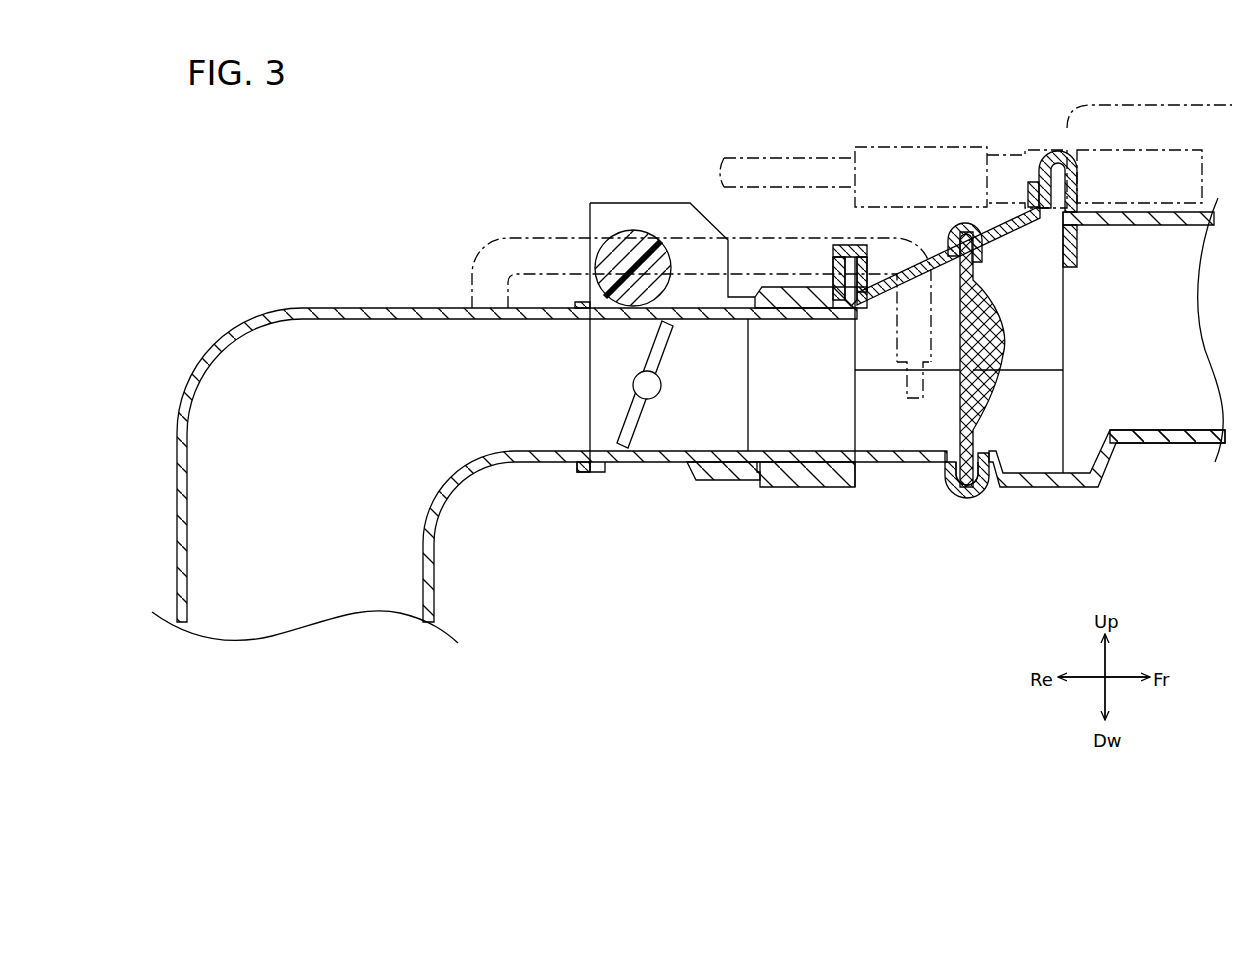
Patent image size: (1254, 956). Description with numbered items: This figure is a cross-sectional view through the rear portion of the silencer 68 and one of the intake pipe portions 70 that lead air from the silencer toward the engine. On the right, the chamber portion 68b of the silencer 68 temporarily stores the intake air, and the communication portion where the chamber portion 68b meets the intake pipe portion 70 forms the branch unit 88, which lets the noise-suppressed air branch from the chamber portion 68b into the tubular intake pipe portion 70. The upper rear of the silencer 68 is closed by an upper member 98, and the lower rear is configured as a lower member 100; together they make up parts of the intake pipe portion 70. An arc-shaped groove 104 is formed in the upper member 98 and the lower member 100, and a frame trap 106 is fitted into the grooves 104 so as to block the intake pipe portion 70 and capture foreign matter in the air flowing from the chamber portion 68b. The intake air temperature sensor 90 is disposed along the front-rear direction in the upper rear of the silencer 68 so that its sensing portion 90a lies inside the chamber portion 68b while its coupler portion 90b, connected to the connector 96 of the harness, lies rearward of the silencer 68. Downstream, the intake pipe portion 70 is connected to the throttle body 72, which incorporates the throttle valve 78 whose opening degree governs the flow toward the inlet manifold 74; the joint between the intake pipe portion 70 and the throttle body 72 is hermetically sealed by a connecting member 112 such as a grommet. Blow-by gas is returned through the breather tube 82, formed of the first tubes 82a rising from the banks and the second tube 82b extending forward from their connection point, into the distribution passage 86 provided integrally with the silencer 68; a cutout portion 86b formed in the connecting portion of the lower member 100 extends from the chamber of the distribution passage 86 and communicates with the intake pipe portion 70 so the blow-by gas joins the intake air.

The silencer 68 is at (1160, 100).
The chamber portion 68b is at (1168, 408).
The intake pipe portion 70 is at (1008, 238).
The throttle body 72 is at (646, 203).
The inlet manifold 74 is at (177, 492).
The throttle valve 78 is at (645, 417).
The breather tube 82 is at (633, 282).
The first tube 82a is at (470, 285).
The second tube 82b is at (752, 272).
The distribution passage 86 is at (832, 467).
The cutout portion 86b is at (905, 400).
The branch unit 88 is at (1027, 492).
The intake air temperature sensor 90 is at (1105, 177).
The sensing portion 90a is at (1128, 150).
The coupler portion 90b is at (1052, 146).
The connector 96 is at (868, 147).
The upper member 98 is at (960, 226).
The lower member 100 is at (937, 465).
The arc-shaped groove 104 is at (975, 262).
The frame trap 106 is at (1002, 322).
The connecting member 112 is at (800, 485).